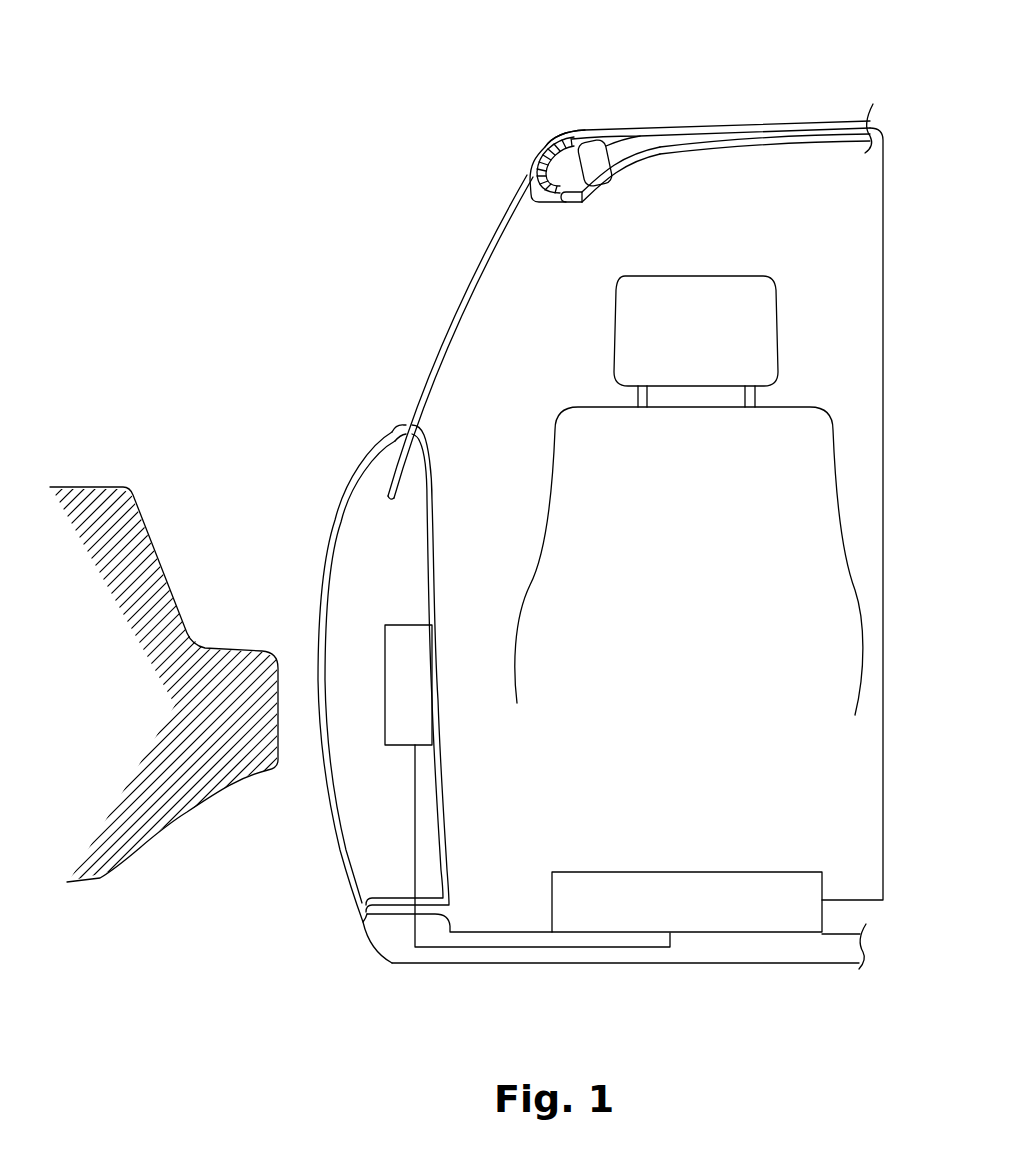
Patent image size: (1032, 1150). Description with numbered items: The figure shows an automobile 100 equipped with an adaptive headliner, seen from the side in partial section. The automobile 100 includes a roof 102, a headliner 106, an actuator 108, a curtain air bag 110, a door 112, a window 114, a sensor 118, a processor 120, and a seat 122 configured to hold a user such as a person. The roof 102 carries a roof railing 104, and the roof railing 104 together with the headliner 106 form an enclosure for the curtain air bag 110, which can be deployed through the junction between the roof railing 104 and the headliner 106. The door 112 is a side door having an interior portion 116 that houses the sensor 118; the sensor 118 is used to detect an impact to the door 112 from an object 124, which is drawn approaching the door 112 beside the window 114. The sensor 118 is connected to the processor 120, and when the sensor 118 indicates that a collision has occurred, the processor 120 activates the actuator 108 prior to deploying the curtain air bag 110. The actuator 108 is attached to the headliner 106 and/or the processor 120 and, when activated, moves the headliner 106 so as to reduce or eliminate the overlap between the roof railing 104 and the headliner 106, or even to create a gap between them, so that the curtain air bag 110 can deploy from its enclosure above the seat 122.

The automobile 100 is at (706, 71).
The roof 102 is at (836, 124).
The roof railing 104 is at (550, 206).
The headliner 106 is at (606, 200).
The actuator 108 is at (633, 158).
The curtain air bag 110 is at (605, 147).
The door 112 is at (333, 832).
The window 114 is at (457, 307).
The interior portion 116 is at (404, 538).
The sensor 118 is at (433, 663).
The processor 120 is at (806, 872).
The seat 122 is at (747, 300).
The object 124 is at (183, 815).